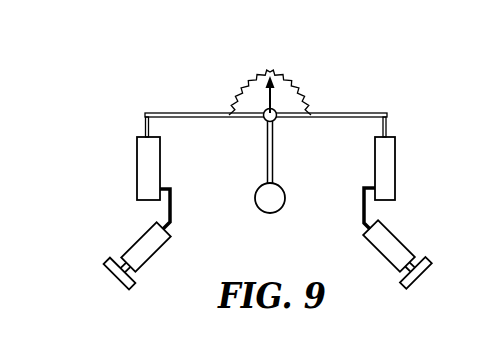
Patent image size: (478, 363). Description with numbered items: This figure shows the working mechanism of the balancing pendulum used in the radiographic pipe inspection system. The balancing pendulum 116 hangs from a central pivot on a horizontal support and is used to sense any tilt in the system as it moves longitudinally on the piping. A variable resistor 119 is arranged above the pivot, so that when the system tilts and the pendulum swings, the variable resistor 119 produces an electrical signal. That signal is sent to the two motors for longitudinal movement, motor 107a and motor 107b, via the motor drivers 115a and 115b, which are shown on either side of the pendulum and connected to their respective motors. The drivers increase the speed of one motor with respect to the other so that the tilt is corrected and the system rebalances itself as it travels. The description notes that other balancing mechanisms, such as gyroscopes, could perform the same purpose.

The motor for longitudinal movement 107a is at (380, 255).
The motor for longitudinal movement 107b is at (152, 257).
The motor driver 115a is at (395, 188).
The motor driver 115b is at (137, 180).
The balancing pendulum 116 is at (275, 158).
The variable resistor 119 is at (248, 82).